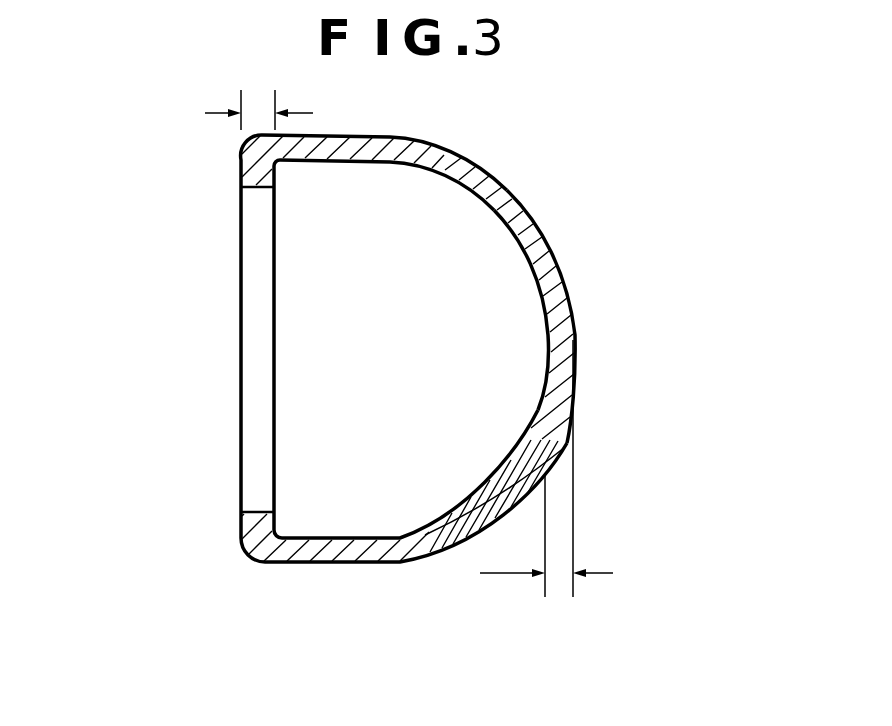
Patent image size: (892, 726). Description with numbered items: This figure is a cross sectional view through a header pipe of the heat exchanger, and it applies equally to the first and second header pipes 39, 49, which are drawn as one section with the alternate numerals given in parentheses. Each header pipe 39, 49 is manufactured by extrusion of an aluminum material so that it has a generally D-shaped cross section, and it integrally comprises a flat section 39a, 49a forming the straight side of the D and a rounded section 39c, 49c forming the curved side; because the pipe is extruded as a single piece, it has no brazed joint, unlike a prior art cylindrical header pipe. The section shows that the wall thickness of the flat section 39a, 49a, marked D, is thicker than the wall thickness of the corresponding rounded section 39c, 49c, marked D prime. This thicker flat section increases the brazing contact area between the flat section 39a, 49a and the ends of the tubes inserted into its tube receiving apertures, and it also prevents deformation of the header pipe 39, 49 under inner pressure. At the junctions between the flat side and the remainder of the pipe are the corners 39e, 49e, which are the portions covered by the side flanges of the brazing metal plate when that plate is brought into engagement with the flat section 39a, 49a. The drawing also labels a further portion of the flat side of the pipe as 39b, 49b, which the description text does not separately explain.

The header pipe 39 is at (400, 396).
The header pipe 49 is at (452, 549).
The flat section 39a is at (275, 178).
The flat section 49a is at (241, 177).
The flat side strip portion 39b is at (176, 349).
The flat side strip portion (alternate embodiment) 49b is at (248, 398).
The rounded section 39c is at (625, 316).
The rounded section 49c is at (556, 275).
The corner 39e is at (388, 534).
The corner 49e is at (264, 563).